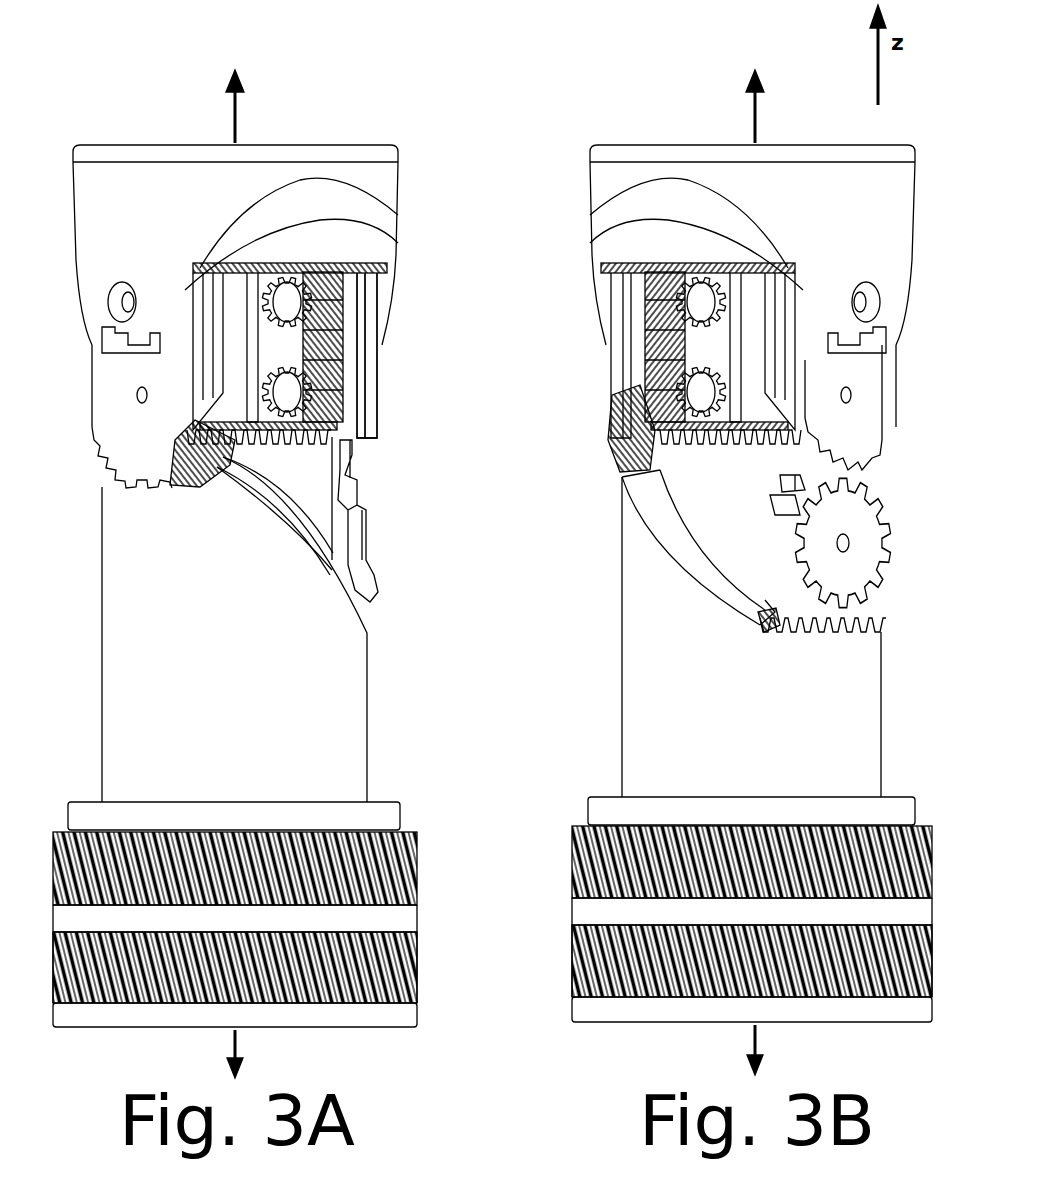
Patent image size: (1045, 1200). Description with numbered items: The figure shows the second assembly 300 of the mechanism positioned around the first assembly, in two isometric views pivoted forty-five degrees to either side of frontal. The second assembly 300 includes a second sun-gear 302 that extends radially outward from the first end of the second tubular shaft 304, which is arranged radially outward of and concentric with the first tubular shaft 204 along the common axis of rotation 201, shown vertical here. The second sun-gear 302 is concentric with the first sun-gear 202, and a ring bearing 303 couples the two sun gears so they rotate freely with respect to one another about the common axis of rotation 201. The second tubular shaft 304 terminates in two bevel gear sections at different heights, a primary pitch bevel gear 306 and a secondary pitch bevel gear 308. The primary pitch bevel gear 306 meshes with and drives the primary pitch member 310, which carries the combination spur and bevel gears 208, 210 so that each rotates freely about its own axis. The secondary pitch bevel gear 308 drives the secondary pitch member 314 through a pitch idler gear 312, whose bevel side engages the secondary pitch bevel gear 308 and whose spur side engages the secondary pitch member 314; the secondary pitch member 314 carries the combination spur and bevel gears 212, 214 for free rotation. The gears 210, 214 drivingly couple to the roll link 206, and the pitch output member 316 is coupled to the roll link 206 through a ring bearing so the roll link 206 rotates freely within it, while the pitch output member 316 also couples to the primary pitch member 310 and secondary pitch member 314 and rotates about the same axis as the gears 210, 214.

In FIG. 3A, the common axis of rotation 201 is at (248, 120).
In FIG. 3B, the common axis of rotation 201 is at (748, 126).
In FIG. 3A, the first sun-gear 202 is at (425, 973).
In FIG. 3B, the first sun-gear 202 is at (552, 973).
In FIG. 3A, the first tubular shaft 204 is at (307, 490).
In FIG. 3B, the first tubular shaft 204 is at (710, 505).
In FIG. 3A, the roll link 206 is at (398, 240).
In FIG. 3B, the roll link 206 is at (630, 233).
In FIG. 3A, the combination spur and bevel gear 208 is at (323, 347).
In FIG. 3B, the combination spur and bevel gear 208 is at (697, 392).
In FIG. 3B, the combination spur and bevel gear 210 is at (697, 312).
In FIG. 3A, the combination spur and bevel gear 212 is at (287, 393).
In FIG. 3A, the combination spur and bevel gear 214 is at (290, 303).
In FIG. 3A, the second assembly 300 is at (208, 58).
In FIG. 3B, the second assembly 300 is at (654, 58).
In FIG. 3A, the second sun-gear 302 is at (425, 858).
In FIG. 3B, the second sun-gear 302 is at (552, 858).
In FIG. 3A, the ring bearing 303 is at (382, 784).
In FIG. 3B, the ring bearing 303 is at (607, 784).
In FIG. 3A, the second tubular shaft 304 is at (373, 708).
In FIG. 3B, the second tubular shaft 304 is at (608, 702).
In FIG. 3A, the primary pitch bevel gear 306 is at (167, 493).
In FIG. 3B, the secondary pitch bevel gear 308 is at (852, 641).
In FIG. 3A, the primary pitch member 310 is at (108, 390).
In FIG. 3B, the primary pitch member 310 is at (610, 402).
In FIG. 3A, the pitch idler gear 312 is at (377, 543).
In FIG. 3B, the pitch idler gear 312 is at (848, 560).
In FIG. 3A, the secondary pitch member 314 is at (370, 417).
In FIG. 3B, the secondary pitch member 314 is at (845, 400).
In FIG. 3A, the pitch output member 316 is at (333, 147).
In FIG. 3B, the pitch output member 316 is at (655, 152).